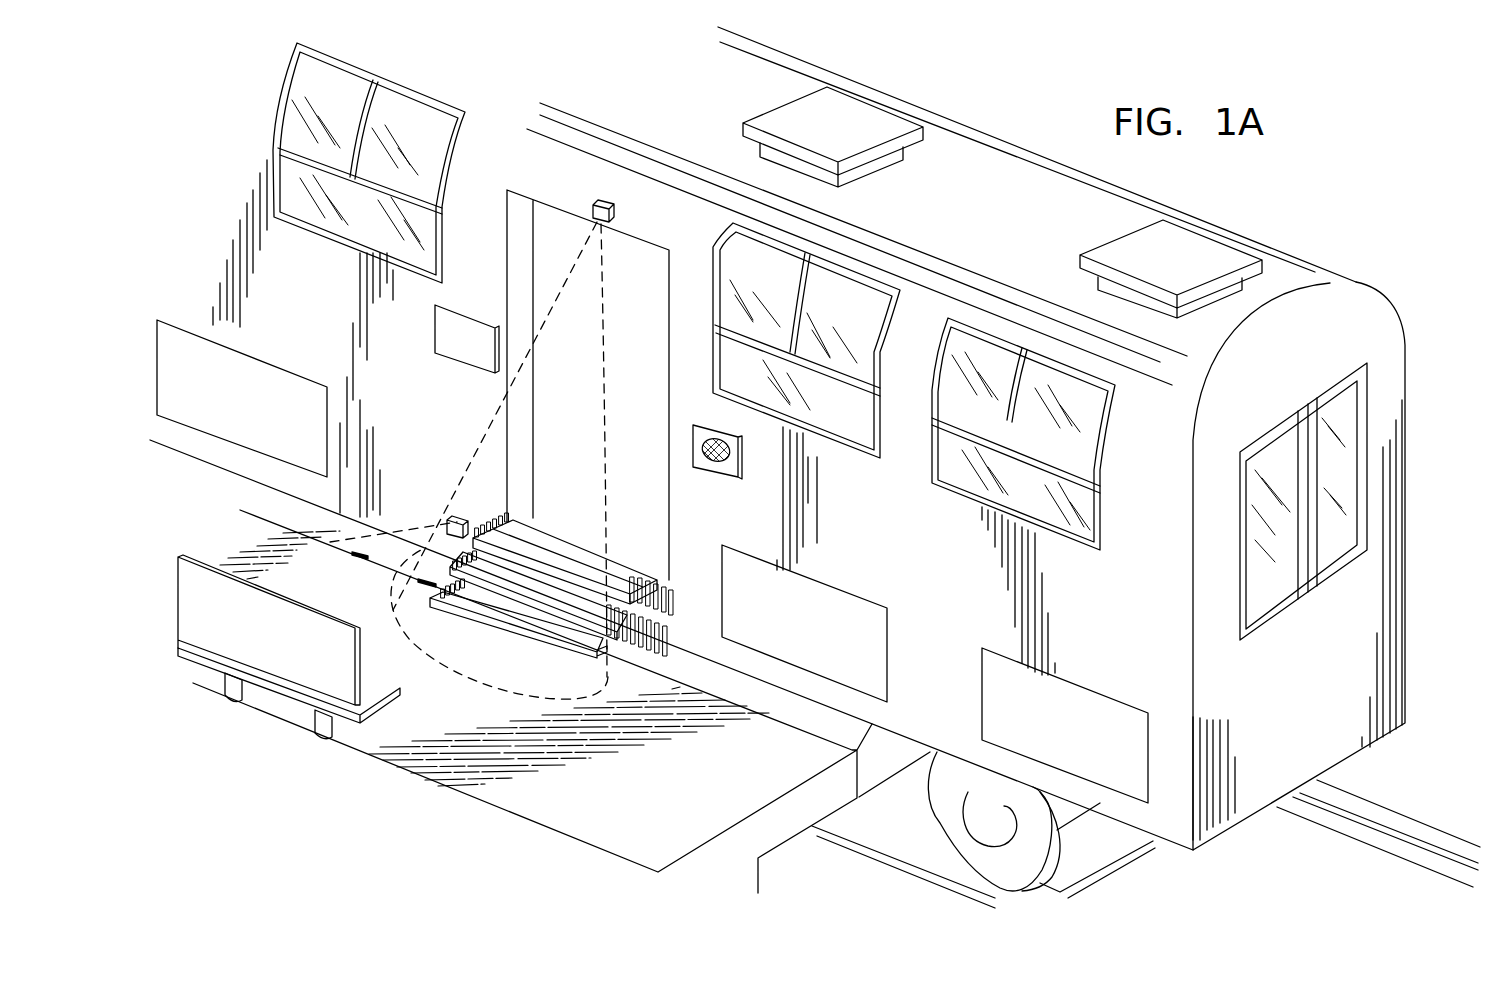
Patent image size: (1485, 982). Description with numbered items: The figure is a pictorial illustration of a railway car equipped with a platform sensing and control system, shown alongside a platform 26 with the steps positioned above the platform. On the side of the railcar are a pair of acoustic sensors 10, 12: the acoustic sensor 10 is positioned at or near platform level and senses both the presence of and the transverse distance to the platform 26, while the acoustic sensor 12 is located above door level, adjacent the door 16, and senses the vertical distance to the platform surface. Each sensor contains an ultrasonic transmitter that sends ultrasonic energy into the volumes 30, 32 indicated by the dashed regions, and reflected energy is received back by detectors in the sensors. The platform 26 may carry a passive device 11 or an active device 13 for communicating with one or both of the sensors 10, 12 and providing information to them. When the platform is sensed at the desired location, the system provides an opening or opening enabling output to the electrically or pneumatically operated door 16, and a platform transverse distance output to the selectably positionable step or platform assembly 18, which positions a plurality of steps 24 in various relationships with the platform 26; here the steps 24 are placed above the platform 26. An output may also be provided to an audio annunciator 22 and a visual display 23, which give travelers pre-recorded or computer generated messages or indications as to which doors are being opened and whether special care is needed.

The acoustic sensor 10 is at (447, 522).
The passive device 11 is at (355, 554).
The acoustic sensor 12 is at (604, 202).
The active device 13 is at (420, 581).
The door 16 is at (518, 200).
The selectably positionable step or platform assembly 18 is at (512, 530).
The audio annunciator 22 is at (740, 476).
The visual display 23 is at (438, 322).
The steps 24 is at (643, 640).
The platform 26 is at (805, 742).
The volume 30 is at (373, 538).
The volume 32 is at (577, 410).